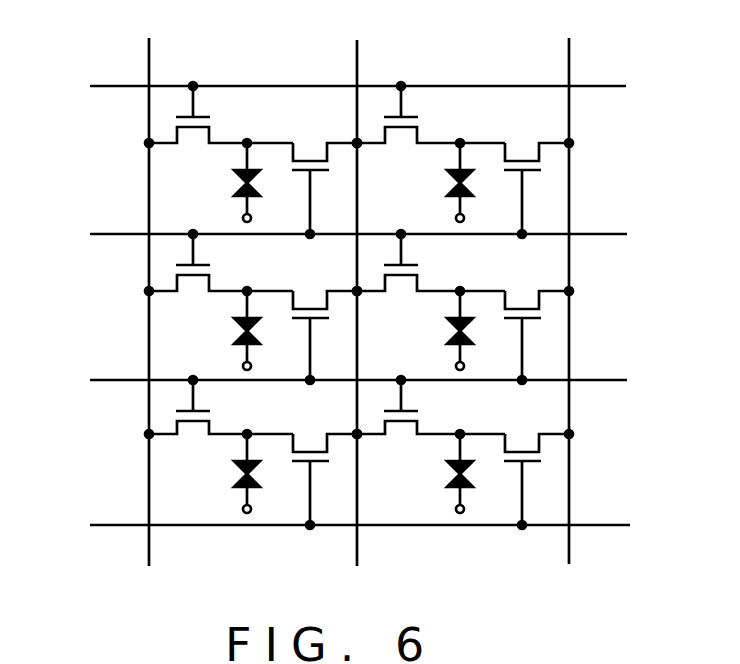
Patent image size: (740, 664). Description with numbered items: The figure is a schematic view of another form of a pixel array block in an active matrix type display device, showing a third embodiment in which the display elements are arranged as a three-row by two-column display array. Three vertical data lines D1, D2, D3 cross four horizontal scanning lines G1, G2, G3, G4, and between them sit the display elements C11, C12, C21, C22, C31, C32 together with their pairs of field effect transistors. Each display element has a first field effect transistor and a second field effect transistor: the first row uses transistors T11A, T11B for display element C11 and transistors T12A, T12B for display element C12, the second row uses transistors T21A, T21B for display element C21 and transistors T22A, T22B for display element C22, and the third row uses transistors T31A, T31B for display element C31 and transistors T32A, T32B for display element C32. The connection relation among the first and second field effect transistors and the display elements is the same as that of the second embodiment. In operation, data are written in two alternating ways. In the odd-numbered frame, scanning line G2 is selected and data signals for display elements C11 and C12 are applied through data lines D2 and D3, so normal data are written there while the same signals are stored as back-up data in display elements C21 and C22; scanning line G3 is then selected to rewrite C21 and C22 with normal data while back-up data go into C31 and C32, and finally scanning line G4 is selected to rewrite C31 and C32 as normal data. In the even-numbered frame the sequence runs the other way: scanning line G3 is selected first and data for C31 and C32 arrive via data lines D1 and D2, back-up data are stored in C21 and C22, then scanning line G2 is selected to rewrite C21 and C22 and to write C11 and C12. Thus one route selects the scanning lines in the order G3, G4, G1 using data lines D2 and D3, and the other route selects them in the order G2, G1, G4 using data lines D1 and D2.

The data line D1 is at (147, 289).
The data line D2 is at (355, 289).
The data line D3 is at (568, 287).
The scanning line G1 is at (331, 88).
The scanning line G2 is at (331, 236).
The scanning line G3 is at (331, 382).
The scanning line G4 is at (333, 528).
The first field effect transistor T11A is at (219, 128).
The second field effect transistor T11B is at (323, 177).
The display element C11 is at (226, 180).
The first field effect transistor T12A is at (429, 128).
The second field effect transistor T12B is at (533, 177).
The display element C12 is at (437, 180).
The first field effect transistor T21A is at (219, 276).
The second field effect transistor T21B is at (323, 324).
The display element C21 is at (226, 328).
The first field effect transistor T22A is at (429, 276).
The second field effect transistor T22B is at (533, 324).
The display element C22 is at (437, 328).
The first field effect transistor T31A is at (219, 421).
The second field effect transistor T31B is at (323, 468).
The display element C31 is at (226, 471).
The first field effect transistor T32A is at (429, 421).
The second field effect transistor T32B is at (533, 468).
The display element C32 is at (437, 471).